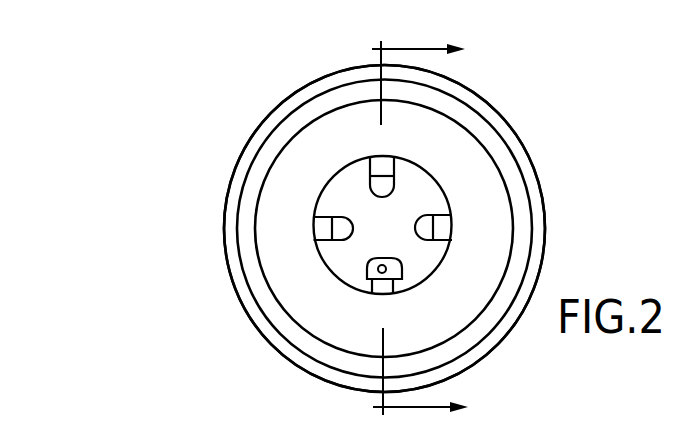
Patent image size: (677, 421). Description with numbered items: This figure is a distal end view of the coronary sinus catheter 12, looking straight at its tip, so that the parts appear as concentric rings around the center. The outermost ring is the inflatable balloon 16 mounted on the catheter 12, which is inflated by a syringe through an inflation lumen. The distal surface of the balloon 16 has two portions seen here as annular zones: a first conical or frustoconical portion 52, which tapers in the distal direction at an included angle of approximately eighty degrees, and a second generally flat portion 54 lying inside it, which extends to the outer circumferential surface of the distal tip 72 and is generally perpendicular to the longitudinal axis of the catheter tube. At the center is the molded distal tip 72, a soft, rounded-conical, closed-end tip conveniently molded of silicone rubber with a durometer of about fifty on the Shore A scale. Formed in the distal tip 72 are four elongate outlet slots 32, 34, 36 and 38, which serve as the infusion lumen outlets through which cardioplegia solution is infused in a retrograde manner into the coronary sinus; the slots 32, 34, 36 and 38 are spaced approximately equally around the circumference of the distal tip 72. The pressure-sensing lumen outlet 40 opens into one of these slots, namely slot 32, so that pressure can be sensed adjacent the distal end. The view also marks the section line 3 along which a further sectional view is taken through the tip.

The section line 3- 3 is at (420, 208).
The coronary sinus catheter 12 is at (216, 196).
The inflatable balloon 16 is at (562, 220).
The first conical portion 52 is at (310, 107).
The second flat portion 54 is at (303, 160).
The distal tip 72 is at (350, 255).
The infusion lumen outlet 36 is at (374, 196).
The infusion lumen outlet 34 is at (340, 237).
The infusion lumen outlet 38 is at (420, 222).
The infusion lumen outlet 32 is at (367, 279).
The pressure-sensing lumen outlet 40 is at (386, 272).